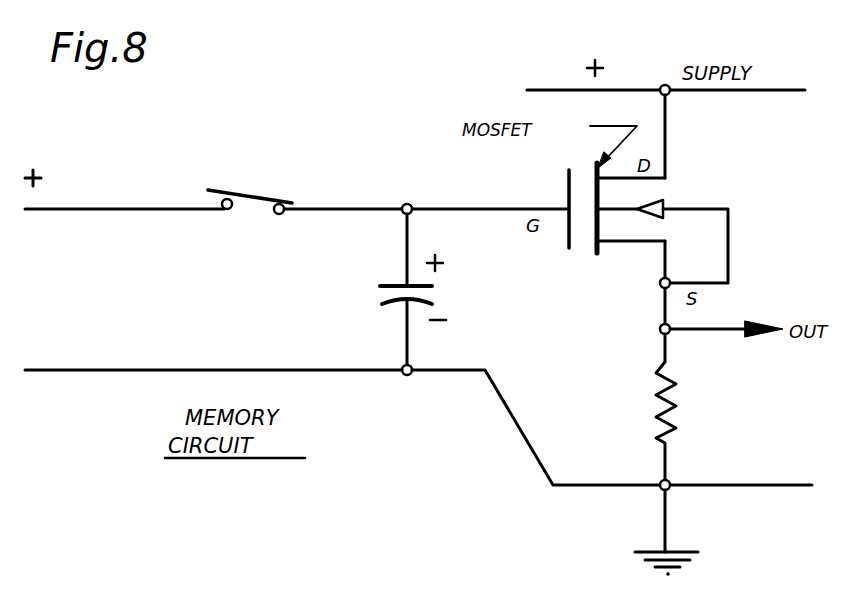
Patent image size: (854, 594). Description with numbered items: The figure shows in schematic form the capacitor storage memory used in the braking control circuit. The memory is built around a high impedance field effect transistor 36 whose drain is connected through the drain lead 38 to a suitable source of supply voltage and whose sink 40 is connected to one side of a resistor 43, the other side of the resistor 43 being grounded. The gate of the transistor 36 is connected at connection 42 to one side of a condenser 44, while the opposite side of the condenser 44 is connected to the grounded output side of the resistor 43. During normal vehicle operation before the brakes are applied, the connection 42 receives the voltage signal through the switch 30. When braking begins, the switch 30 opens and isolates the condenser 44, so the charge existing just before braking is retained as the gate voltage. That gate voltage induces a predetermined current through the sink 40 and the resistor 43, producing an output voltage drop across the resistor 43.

The switch 30 is at (248, 193).
The connection 42 is at (407, 204).
The condenser 44 is at (385, 302).
The drain lead 38 is at (668, 131).
The field effect transistor 36 is at (662, 195).
The sink 40 is at (660, 283).
The resistor 43 is at (657, 395).